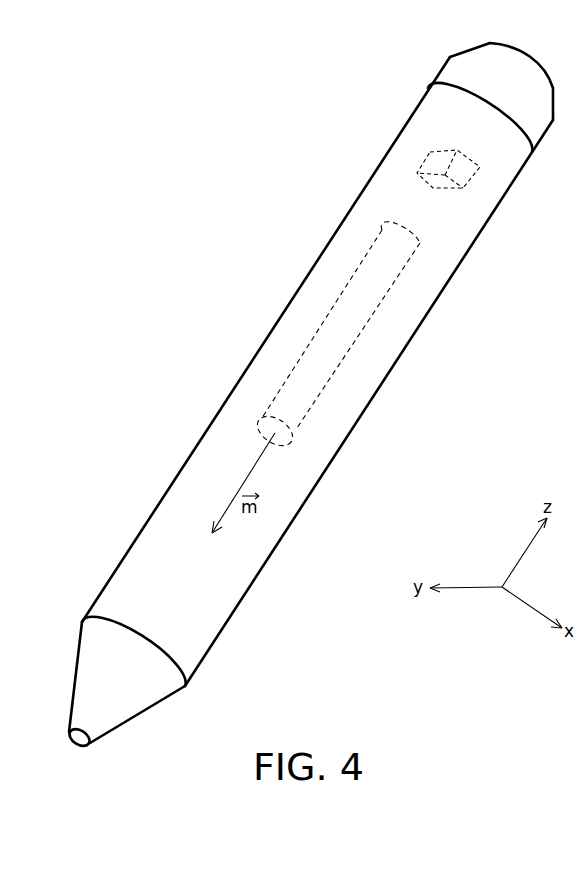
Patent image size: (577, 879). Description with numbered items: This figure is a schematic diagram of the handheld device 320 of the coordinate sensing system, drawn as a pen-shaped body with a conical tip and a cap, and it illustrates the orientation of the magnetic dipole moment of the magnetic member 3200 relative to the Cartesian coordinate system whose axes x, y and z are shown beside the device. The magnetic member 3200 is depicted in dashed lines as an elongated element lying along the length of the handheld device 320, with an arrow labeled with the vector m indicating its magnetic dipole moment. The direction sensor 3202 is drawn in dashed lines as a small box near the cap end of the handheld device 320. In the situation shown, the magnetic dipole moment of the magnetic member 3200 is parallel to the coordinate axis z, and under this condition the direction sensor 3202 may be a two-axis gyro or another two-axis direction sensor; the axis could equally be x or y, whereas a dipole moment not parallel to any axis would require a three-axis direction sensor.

The handheld device 320 is at (192, 148).
The magnetic member 3200 is at (353, 347).
The direction sensor 3202 is at (430, 152).